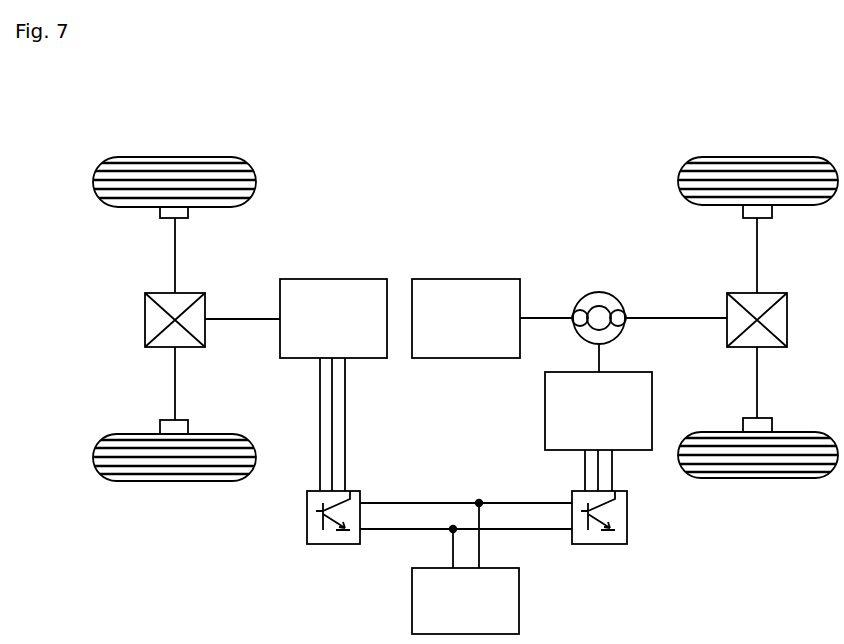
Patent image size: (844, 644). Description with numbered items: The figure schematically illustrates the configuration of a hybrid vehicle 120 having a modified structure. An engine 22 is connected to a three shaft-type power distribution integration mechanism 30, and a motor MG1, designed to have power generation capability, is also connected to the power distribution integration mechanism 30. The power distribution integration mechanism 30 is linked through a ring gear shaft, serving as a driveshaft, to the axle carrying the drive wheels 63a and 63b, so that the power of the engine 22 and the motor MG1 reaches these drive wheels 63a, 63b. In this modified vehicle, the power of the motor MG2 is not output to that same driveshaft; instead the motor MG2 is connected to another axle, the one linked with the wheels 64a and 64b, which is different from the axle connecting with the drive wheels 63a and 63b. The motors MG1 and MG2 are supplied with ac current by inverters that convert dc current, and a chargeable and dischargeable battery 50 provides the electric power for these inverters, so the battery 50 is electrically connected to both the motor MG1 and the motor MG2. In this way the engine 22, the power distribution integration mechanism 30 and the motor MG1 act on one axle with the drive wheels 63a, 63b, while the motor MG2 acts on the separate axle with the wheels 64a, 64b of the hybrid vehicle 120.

The hybrid vehicle 120 is at (476, 139).
The wheel 64a is at (175, 156).
The wheel 64b is at (175, 483).
The drive wheel 63a is at (758, 156).
The drive wheel 63b is at (757, 479).
The motor MG2 is at (333, 278).
The motor MG1 is at (545, 410).
The engine 22 is at (466, 278).
The power distribution integration mechanism 30 is at (599, 292).
The battery 50 is at (520, 601).